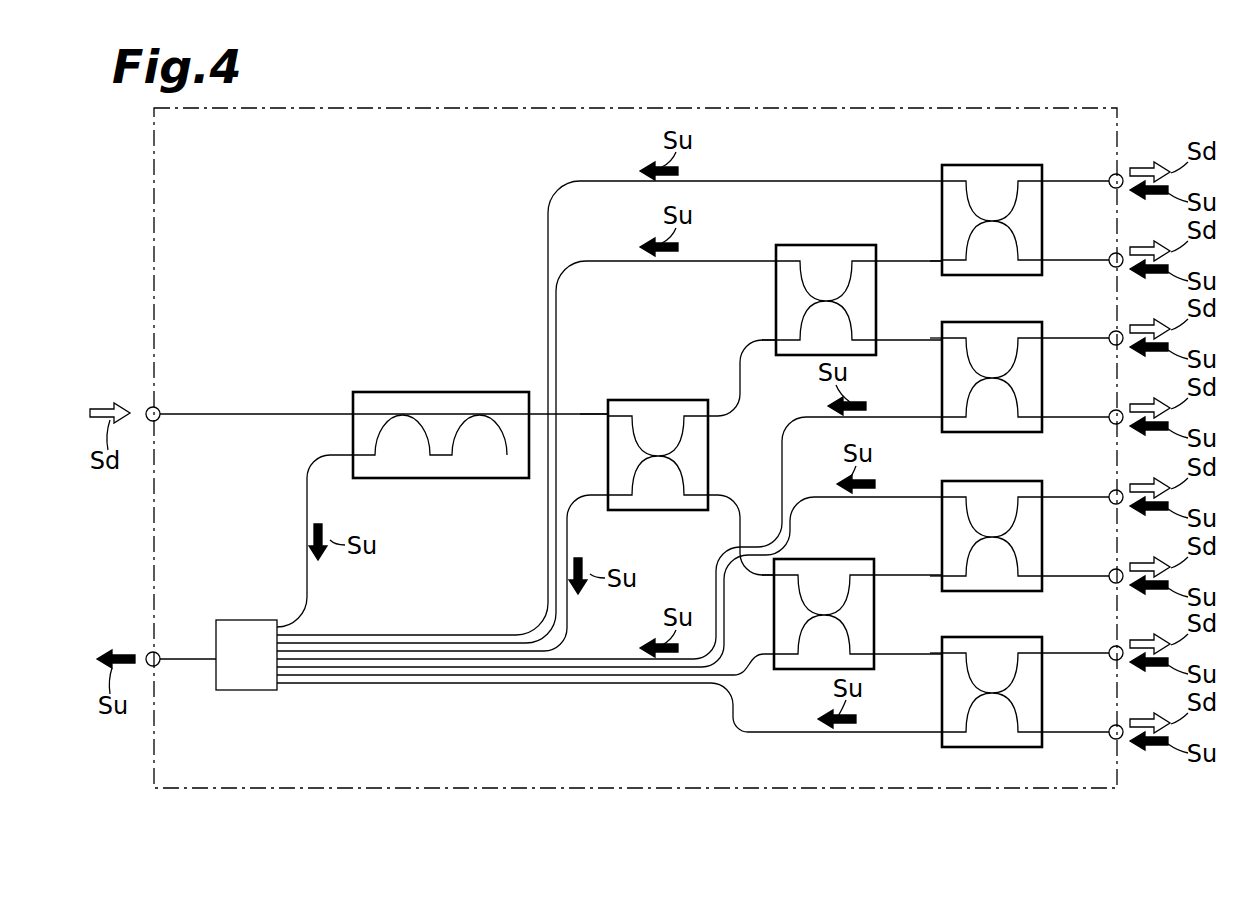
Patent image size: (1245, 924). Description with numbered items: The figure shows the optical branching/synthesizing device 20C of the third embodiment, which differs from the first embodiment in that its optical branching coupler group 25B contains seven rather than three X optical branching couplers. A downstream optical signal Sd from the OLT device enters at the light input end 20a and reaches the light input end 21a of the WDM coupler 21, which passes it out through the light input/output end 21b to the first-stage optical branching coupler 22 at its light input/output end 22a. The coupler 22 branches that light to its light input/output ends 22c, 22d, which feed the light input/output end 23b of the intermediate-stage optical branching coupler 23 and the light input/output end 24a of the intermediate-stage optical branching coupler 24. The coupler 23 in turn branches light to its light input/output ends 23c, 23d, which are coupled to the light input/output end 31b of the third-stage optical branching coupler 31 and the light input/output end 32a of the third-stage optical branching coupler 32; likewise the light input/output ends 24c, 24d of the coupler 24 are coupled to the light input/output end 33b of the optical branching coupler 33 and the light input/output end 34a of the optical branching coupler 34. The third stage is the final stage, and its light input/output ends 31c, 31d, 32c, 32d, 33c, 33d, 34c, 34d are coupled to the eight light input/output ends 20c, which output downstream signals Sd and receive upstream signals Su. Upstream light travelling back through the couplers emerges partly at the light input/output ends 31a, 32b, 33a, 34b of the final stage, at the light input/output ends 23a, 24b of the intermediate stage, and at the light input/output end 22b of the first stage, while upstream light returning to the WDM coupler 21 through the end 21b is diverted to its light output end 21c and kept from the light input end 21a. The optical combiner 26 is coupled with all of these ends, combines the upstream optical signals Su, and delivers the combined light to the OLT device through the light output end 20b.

The optical branching/synthesizing device 20C is at (458, 107).
The optical branching coupler group 25B is at (857, 140).
The light input end 20a is at (160, 409).
The light output end 20b is at (158, 664).
The light input/output ends 20c is at (1120, 174).
The WDM coupler 21 is at (400, 392).
The light input end 21a is at (352, 410).
The light input/output end 21b is at (529, 410).
The light output end 21c is at (352, 458).
The optical branching coupler 22 is at (632, 400).
The light input/output end 22a is at (607, 413).
The light input/output end 22b is at (607, 494).
The light input/output end 22c is at (708, 414).
The light input/output end 22d is at (709, 494).
The optical branching coupler 23 is at (822, 245).
The light input/output end 23a is at (776, 262).
The light input/output end 23b is at (776, 342).
The light input/output end 23c is at (930, 259).
The light input/output end 23d is at (877, 342).
The optical branching coupler 24 is at (822, 559).
The light input/output end 24a is at (774, 577).
The light input/output end 24b is at (774, 656).
The light input/output end 24c is at (875, 576).
The light input/output end 24d is at (876, 656).
The optical combiner 26 is at (245, 620).
The optical branching coupler 31 is at (990, 165).
The light input/output end 31a is at (941, 183).
The light input/output end 31b is at (941, 263).
The light input/output end 31c is at (1043, 180).
The light input/output end 31d is at (1043, 259).
The optical branching coupler 32 is at (992, 322).
The light input/output end 32a is at (941, 340).
The light input/output end 32b is at (941, 419).
The light input/output end 32c is at (1043, 337).
The light input/output end 32d is at (1043, 416).
The optical branching coupler 33 is at (992, 481).
The light input/output end 33a is at (941, 499).
The light input/output end 33b is at (941, 578).
The light input/output end 33c is at (1043, 496).
The light input/output end 33d is at (1043, 575).
The optical branching coupler 34 is at (992, 637).
The light input/output end 34a is at (941, 655).
The light input/output end 34b is at (941, 734).
The light input/output end 34c is at (1043, 652).
The light input/output end 34d is at (1043, 731).